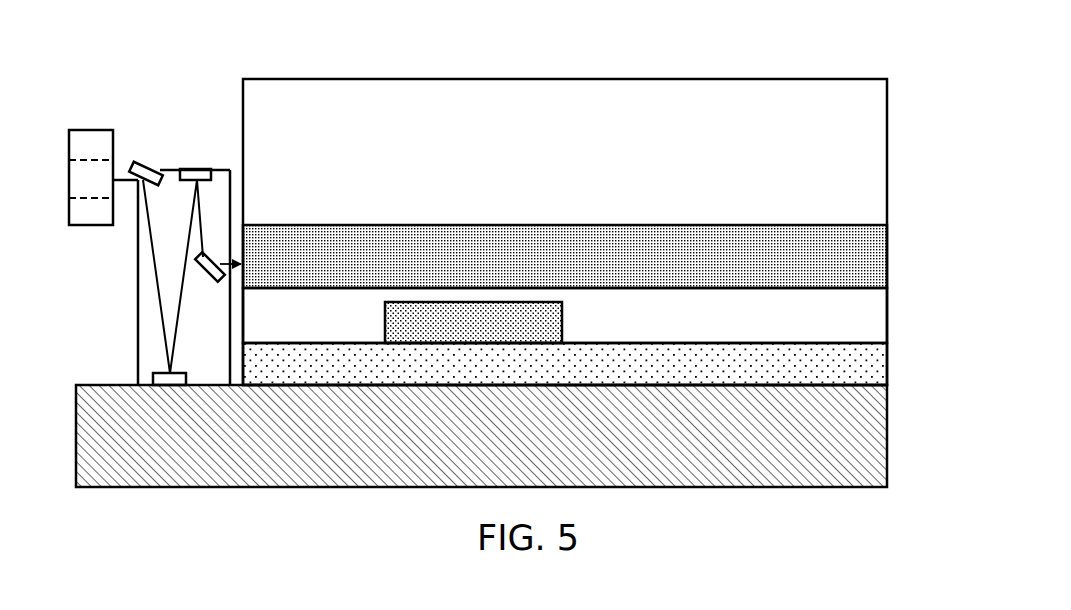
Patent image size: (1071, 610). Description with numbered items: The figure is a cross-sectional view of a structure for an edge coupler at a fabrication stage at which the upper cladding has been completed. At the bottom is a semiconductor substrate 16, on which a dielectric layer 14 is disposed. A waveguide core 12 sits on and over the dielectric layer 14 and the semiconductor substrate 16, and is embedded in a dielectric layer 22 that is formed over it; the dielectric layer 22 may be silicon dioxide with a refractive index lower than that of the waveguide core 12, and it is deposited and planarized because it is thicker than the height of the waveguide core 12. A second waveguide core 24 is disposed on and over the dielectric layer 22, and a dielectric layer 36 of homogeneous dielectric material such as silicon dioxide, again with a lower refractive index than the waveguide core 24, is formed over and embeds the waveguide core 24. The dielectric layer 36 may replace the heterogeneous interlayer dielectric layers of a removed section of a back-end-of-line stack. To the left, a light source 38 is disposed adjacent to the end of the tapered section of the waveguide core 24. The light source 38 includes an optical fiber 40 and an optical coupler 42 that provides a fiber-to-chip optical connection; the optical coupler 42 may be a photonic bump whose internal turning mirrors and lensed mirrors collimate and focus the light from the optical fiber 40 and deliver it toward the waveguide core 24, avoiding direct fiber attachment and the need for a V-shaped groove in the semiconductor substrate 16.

The light source 38 is at (204, 79).
The optical fiber 40 is at (97, 143).
The optical coupler 42 is at (219, 203).
The dielectric layer 36 is at (858, 172).
The waveguide core 24 is at (855, 245).
The dielectric layer 22 is at (847, 320).
The waveguide core 12 is at (420, 322).
The dielectric layer 14 is at (848, 365).
The semiconductor substrate 16 is at (855, 448).